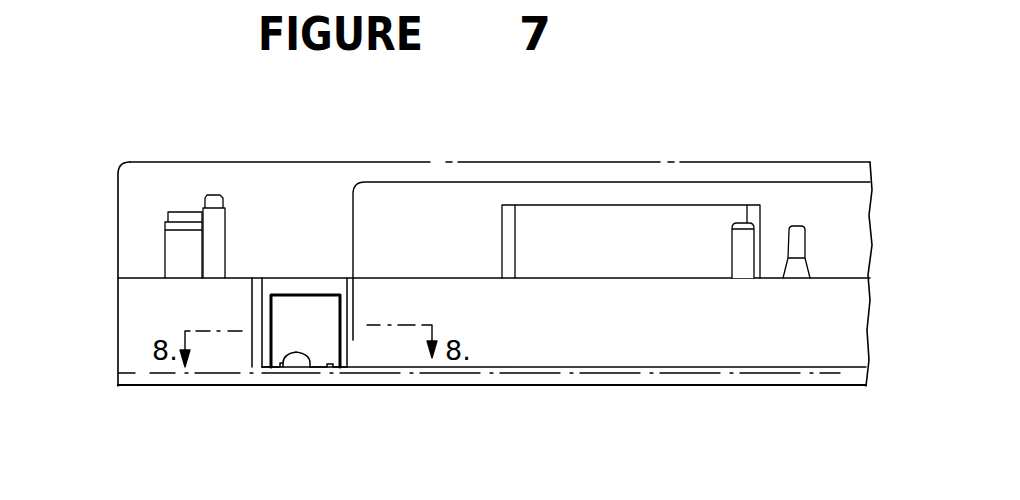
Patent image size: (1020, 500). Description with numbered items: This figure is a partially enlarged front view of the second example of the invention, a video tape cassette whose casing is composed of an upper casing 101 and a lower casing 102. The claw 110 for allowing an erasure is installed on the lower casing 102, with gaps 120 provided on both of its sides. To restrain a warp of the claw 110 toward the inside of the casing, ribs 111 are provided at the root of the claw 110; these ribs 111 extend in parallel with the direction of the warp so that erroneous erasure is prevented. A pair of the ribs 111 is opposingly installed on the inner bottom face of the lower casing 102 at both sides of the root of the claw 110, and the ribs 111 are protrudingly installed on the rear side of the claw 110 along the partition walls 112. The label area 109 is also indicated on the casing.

The upper casing 101 is at (390, 162).
The lower casing 102 is at (158, 318).
The label area 109 is at (658, 357).
The claw 110 is at (283, 334).
The ribs 111 is at (295, 358).
The partition walls 112 is at (250, 302).
The gaps 120 is at (263, 328).